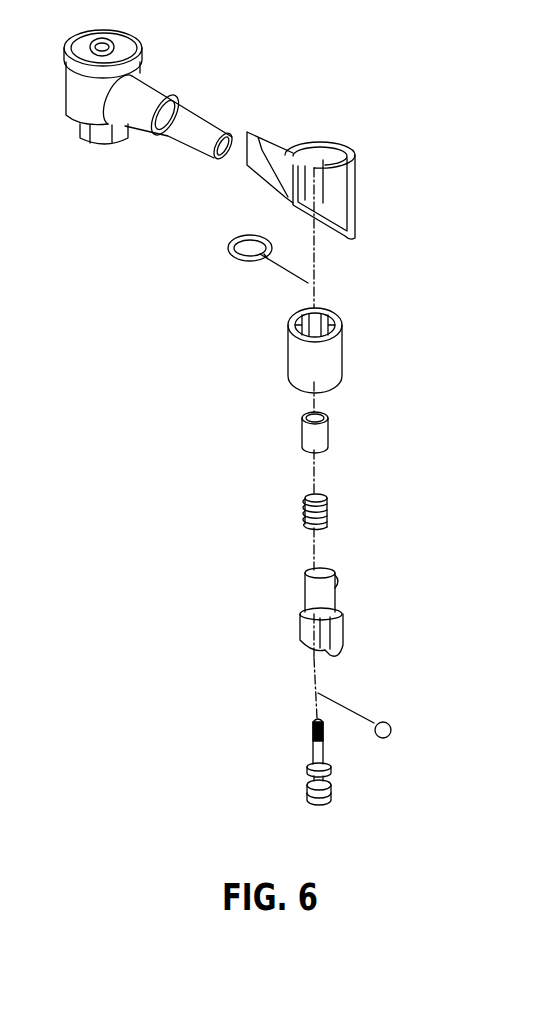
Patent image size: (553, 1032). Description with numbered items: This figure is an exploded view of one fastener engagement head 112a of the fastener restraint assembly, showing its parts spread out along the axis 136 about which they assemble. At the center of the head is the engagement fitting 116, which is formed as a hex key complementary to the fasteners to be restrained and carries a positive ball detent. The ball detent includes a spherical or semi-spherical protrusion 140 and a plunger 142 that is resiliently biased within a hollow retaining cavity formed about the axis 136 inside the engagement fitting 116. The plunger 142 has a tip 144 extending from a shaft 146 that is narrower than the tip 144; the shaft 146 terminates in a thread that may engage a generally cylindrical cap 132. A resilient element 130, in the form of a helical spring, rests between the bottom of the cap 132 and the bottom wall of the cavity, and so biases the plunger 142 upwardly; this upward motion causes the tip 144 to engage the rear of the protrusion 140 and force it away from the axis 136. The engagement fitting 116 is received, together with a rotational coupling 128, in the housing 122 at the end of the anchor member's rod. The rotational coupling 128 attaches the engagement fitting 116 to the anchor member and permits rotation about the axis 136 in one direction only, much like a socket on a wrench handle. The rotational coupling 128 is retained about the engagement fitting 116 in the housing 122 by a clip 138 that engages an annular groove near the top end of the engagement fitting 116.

The fastener engagement head 112a is at (403, 150).
The engagement fitting 116 is at (343, 627).
The housing 122 is at (348, 160).
The rotational coupling 128 is at (285, 355).
The resilient element 130 is at (305, 513).
The cap 132 is at (305, 428).
The axis 136 is at (313, 270).
The clip 138 is at (232, 262).
The protrusion 140 is at (391, 723).
The plunger 142 is at (315, 754).
The tip 144 is at (315, 802).
The shaft 146 is at (293, 760).